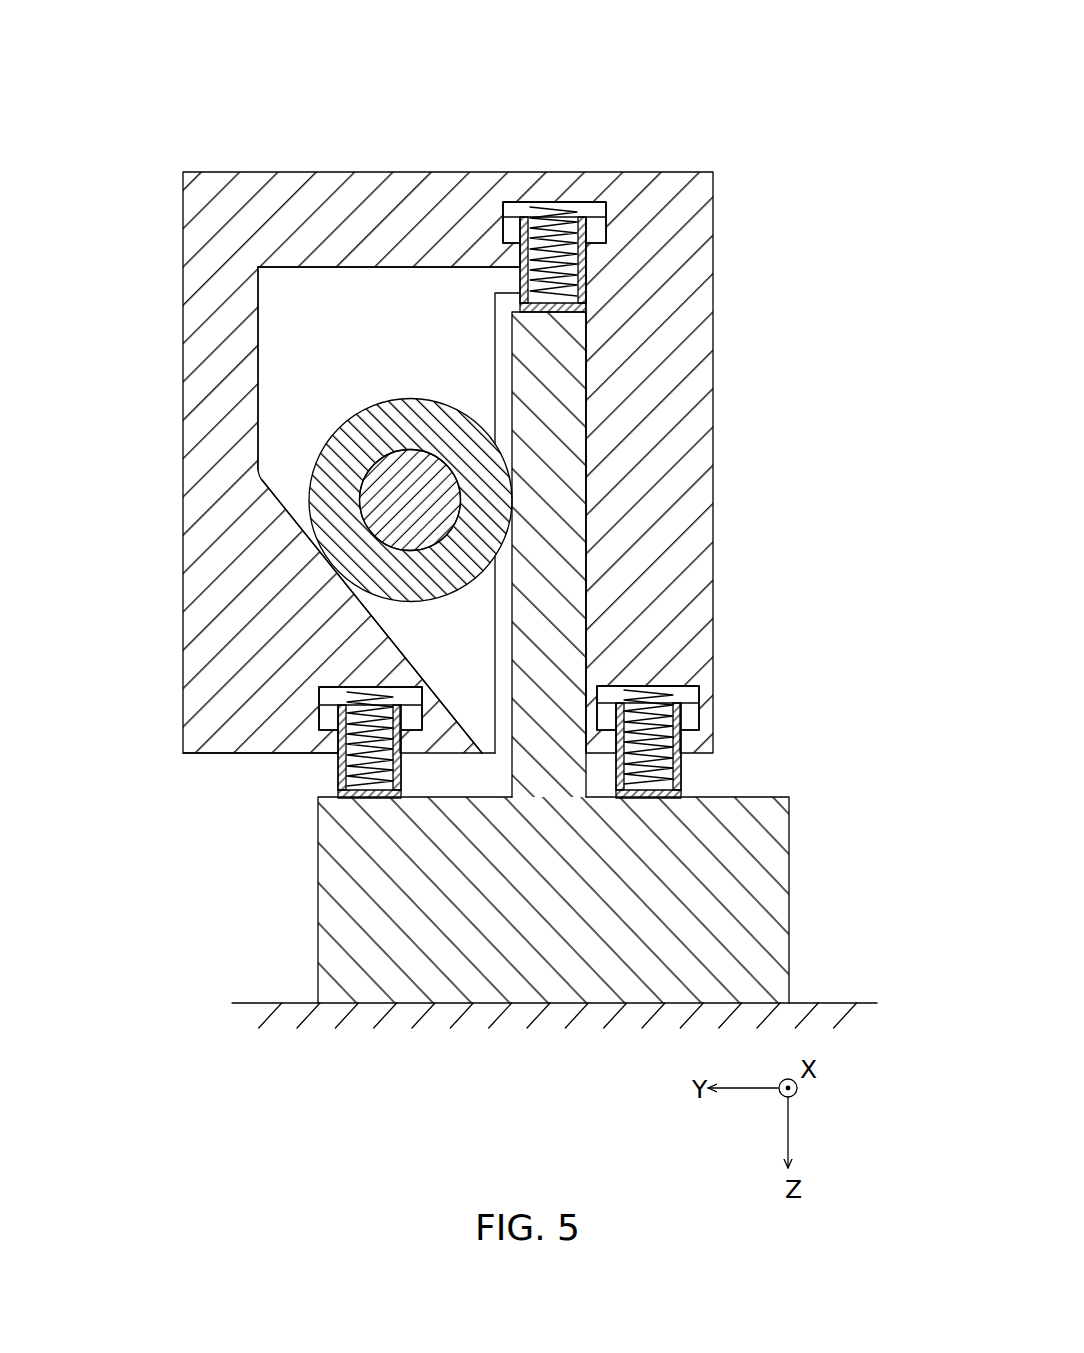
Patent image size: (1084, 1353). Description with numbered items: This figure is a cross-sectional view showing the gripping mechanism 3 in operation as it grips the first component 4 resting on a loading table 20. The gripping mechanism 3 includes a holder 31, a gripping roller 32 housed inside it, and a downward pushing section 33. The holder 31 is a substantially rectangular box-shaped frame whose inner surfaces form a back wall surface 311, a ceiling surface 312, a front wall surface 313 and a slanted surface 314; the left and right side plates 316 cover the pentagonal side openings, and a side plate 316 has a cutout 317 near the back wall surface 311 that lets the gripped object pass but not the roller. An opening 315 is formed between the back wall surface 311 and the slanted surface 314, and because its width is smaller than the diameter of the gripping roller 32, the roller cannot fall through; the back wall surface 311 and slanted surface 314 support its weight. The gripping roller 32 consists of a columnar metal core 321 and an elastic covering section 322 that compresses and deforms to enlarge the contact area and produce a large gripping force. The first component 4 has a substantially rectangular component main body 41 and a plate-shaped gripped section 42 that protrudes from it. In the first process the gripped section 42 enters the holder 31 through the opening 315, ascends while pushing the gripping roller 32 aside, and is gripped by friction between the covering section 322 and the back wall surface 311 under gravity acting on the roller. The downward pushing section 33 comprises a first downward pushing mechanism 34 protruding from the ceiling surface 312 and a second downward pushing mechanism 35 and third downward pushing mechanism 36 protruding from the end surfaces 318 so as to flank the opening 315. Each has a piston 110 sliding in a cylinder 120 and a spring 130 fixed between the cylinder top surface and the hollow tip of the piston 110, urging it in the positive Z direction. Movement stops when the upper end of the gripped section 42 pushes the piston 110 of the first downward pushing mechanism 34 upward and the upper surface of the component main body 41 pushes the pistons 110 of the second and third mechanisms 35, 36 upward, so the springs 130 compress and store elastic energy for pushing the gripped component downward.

The gripping mechanism 3 is at (692, 70).
The first component 4 is at (543, 657).
The loading table 20 is at (835, 1003).
The holder 31 is at (170, 145).
The gripping roller 32 is at (387, 472).
The downward pushing section 33 is at (539, 157).
The first downward pushing mechanism 34 is at (553, 160).
The second downward pushing mechanism 35 is at (305, 793).
The third downward pushing mechanism 36 is at (778, 788).
The component main body 41 is at (789, 880).
The gripped section 42 is at (512, 365).
The piston 110 is at (524, 280).
The cylinder 120 is at (592, 236).
The spring 130 is at (527, 213).
The back wall surface 311 is at (585, 512).
The ceiling surface 312 is at (418, 268).
The front wall surface 313 is at (258, 316).
The slanted surface 314 is at (425, 688).
The opening 315 is at (503, 765).
The side plate 316 is at (389, 435).
The cutout 317 is at (505, 612).
The end surface 318 is at (197, 753).
The core 321 is at (412, 500).
The covering section 322 is at (398, 408).